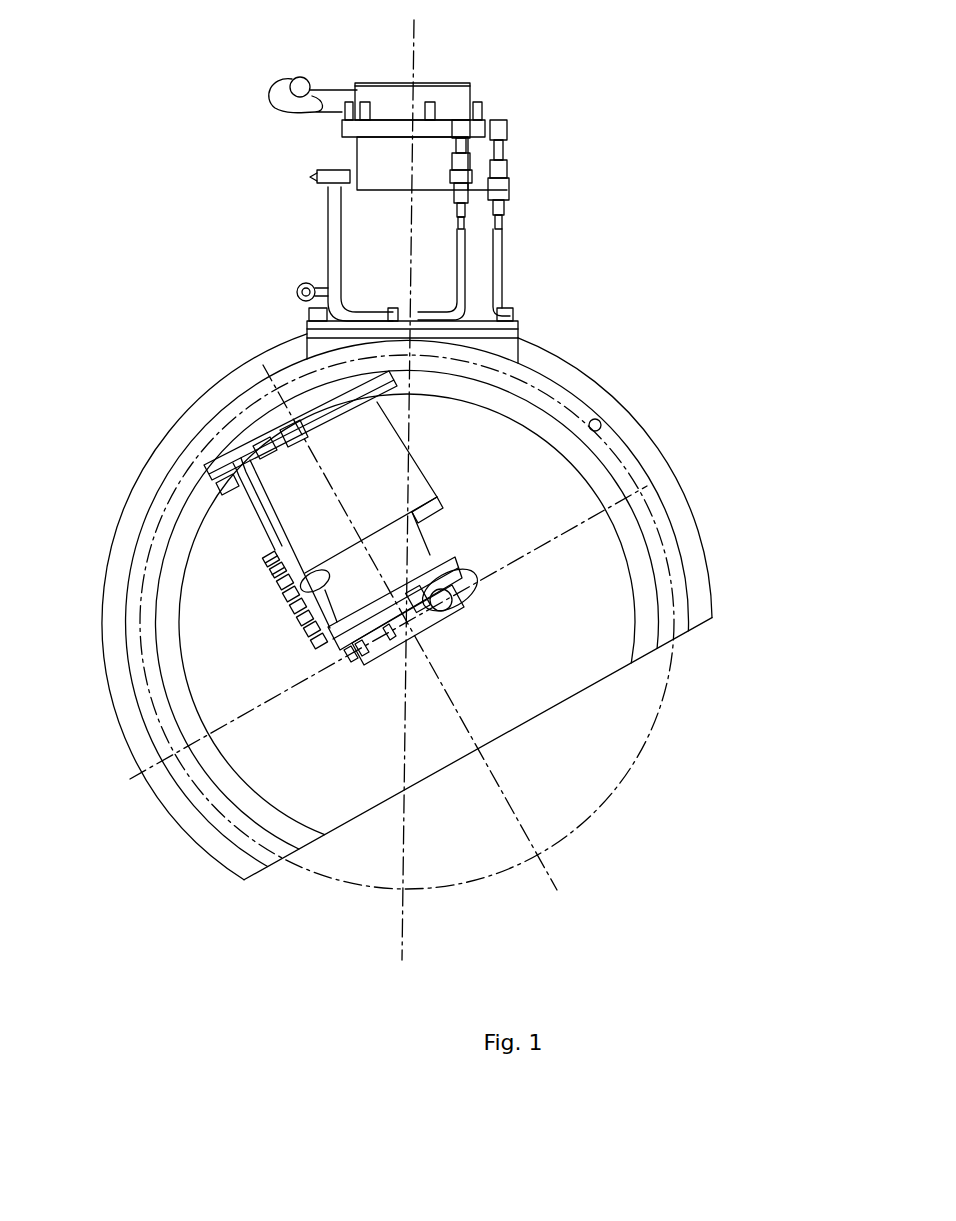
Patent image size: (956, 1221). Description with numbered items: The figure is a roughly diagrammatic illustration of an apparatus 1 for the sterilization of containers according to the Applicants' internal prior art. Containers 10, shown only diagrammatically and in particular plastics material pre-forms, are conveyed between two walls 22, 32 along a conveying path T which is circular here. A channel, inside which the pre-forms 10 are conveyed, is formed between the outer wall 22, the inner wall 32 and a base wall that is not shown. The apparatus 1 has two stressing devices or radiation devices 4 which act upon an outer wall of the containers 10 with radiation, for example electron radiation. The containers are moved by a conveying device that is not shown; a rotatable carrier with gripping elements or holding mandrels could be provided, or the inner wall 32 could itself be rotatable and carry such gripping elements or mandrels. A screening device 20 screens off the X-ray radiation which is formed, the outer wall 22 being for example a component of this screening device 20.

The apparatus 1 is at (228, 915).
The radiation devices 4 is at (505, 270).
The containers 10 is at (600, 423).
The screening device 20 is at (158, 858).
The outer wall 22 is at (695, 507).
The inner wall 32 is at (668, 660).
The conveying path T is at (223, 412).